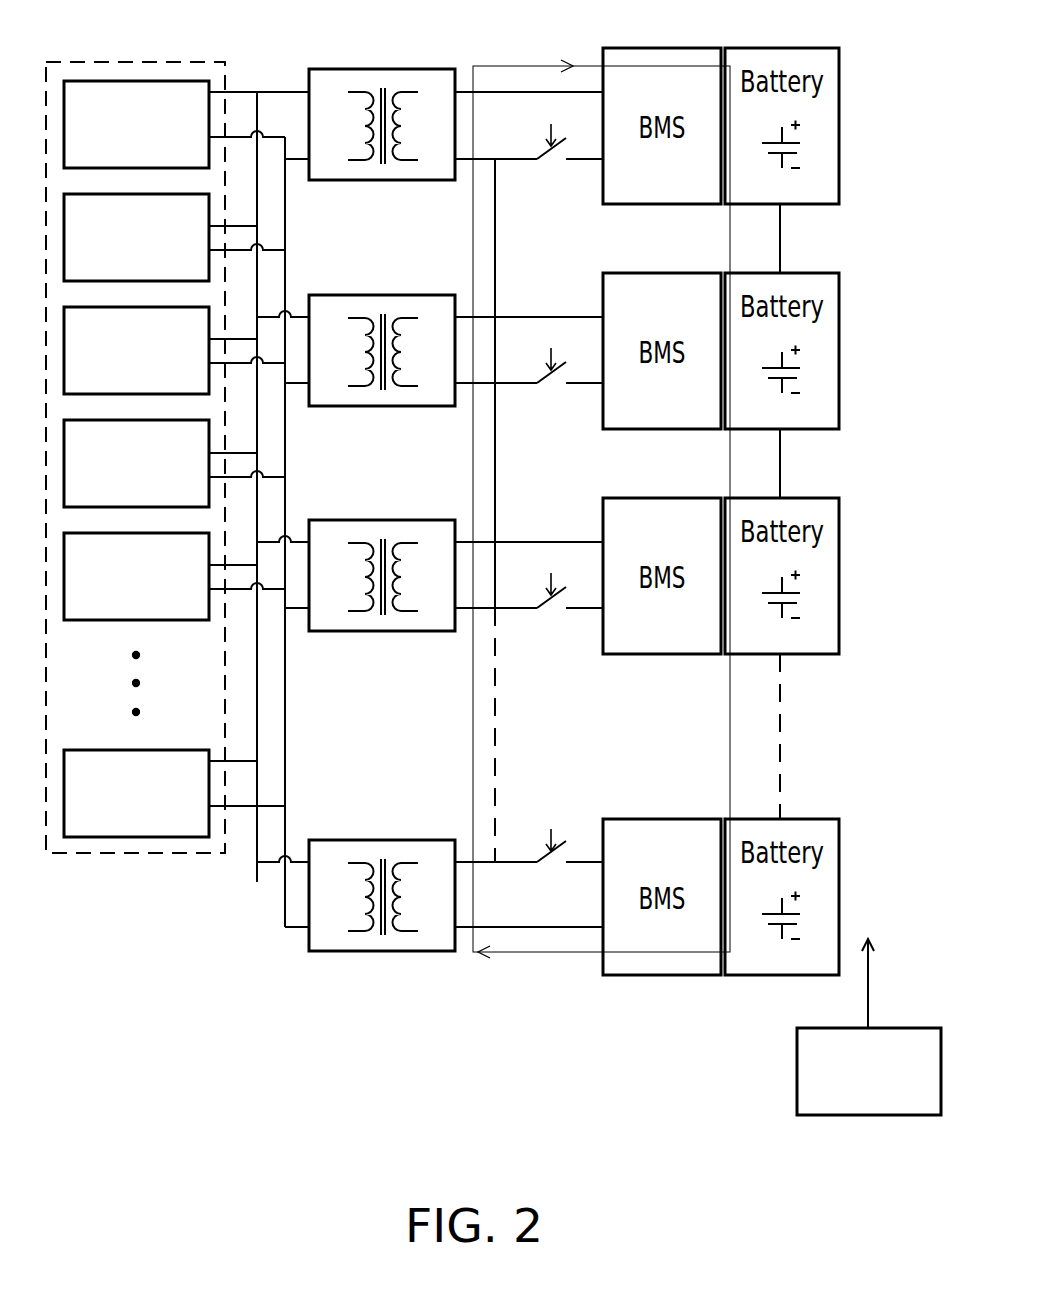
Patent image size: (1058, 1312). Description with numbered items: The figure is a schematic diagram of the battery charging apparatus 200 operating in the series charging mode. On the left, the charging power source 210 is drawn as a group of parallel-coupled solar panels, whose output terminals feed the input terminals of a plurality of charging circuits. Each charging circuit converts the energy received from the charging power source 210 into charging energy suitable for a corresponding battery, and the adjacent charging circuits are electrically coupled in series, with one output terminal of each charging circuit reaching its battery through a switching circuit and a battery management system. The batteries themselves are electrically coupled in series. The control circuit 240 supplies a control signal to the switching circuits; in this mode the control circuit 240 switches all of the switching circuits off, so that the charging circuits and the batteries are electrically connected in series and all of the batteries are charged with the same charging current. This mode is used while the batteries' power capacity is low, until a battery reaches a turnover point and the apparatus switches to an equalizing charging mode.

The battery charging apparatus 200 is at (138, 1193).
The charging power source 210 is at (137, 61).
The control circuit 240 is at (897, 1028).